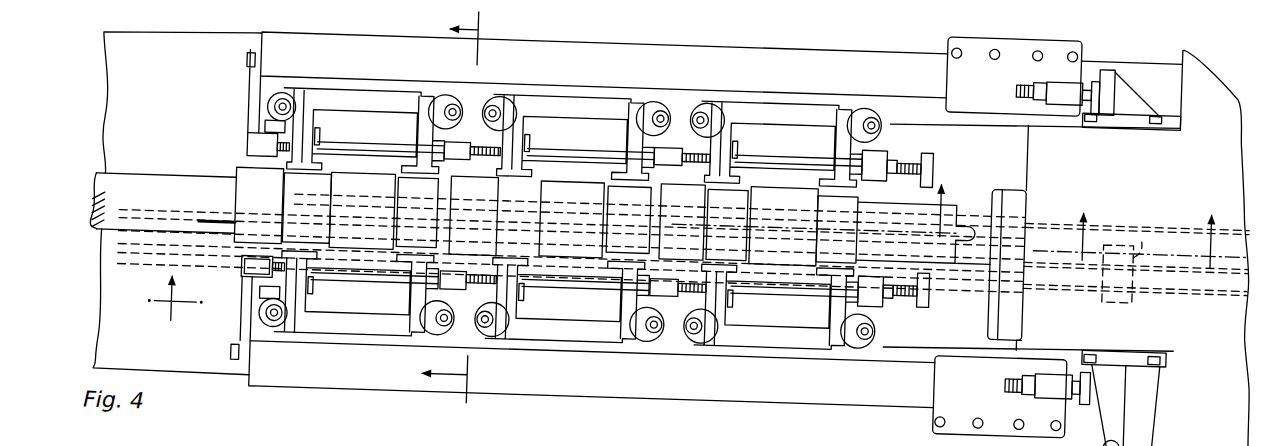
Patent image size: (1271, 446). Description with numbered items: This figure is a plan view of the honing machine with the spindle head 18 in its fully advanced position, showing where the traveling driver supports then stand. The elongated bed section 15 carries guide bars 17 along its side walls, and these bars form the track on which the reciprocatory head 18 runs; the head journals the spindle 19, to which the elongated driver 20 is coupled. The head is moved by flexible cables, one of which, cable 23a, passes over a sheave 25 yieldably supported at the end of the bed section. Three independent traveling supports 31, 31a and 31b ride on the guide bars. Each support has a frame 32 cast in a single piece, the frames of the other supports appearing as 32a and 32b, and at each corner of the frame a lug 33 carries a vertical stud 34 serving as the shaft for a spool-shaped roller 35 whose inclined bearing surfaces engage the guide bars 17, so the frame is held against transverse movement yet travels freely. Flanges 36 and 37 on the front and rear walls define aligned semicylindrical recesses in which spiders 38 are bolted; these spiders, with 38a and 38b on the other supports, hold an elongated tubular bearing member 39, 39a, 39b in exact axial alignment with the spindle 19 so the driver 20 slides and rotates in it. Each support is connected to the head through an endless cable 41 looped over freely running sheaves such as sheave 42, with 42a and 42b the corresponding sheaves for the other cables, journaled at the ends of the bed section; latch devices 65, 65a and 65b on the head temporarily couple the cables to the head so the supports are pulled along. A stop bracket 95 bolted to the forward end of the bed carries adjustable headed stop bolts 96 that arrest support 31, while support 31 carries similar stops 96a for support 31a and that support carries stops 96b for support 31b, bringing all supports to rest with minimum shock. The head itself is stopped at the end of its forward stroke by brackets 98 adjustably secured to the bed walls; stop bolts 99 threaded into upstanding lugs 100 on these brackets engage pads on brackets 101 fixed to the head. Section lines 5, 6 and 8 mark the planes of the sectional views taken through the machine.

The section line 5- 5 is at (553, 246).
The section line 6- 6 is at (449, 202).
The section line 8- 8 is at (1154, 232).
The bed section 15 is at (367, 40).
The guide bars 17 is at (950, 97).
The spindle head 18 is at (1235, 76).
The spindle 19 is at (977, 190).
The driver 20 is at (176, 184).
The flexible cable 23a is at (1048, 203).
The sheave 25 is at (316, 191).
The traveling support 31 is at (374, 86).
The traveling support 31a is at (579, 90).
The traveling support 31b is at (793, 92).
The frame 32 is at (333, 331).
The lower clamp carriage 32a is at (592, 329).
The lower clamp carriage 32b is at (802, 331).
The lug 33 is at (270, 91).
The vertical pin or stud 34 is at (277, 105).
The roller 35 is at (251, 332).
The flange 36 is at (722, 93).
The flange 37 is at (846, 94).
The spiders 38 is at (431, 124).
The piston rod 38a is at (511, 297).
The piston rod 38b is at (855, 132).
The tubular bearing member 39 is at (348, 171).
The clamp block 39a is at (578, 176).
The clamp block 39b is at (781, 180).
The endless flexible cable 41 is at (992, 267).
The sheave 42 is at (167, 270).
The shaft portion 42a is at (168, 242).
The shaft portion 42b is at (159, 214).
The latch device 65 is at (1141, 273).
The latch device 65a is at (1143, 230).
The latch device 65b is at (1132, 212).
The stop bracket 95 is at (251, 309).
The adjustable stops 96 is at (252, 136).
The stops 96a is at (488, 141).
The stops 96b is at (700, 145).
The brackets 98 is at (952, 41).
The stop bolts 99 is at (1018, 68).
The upstanding lugs 100 is at (1062, 59).
The brackets 101 is at (1113, 68).